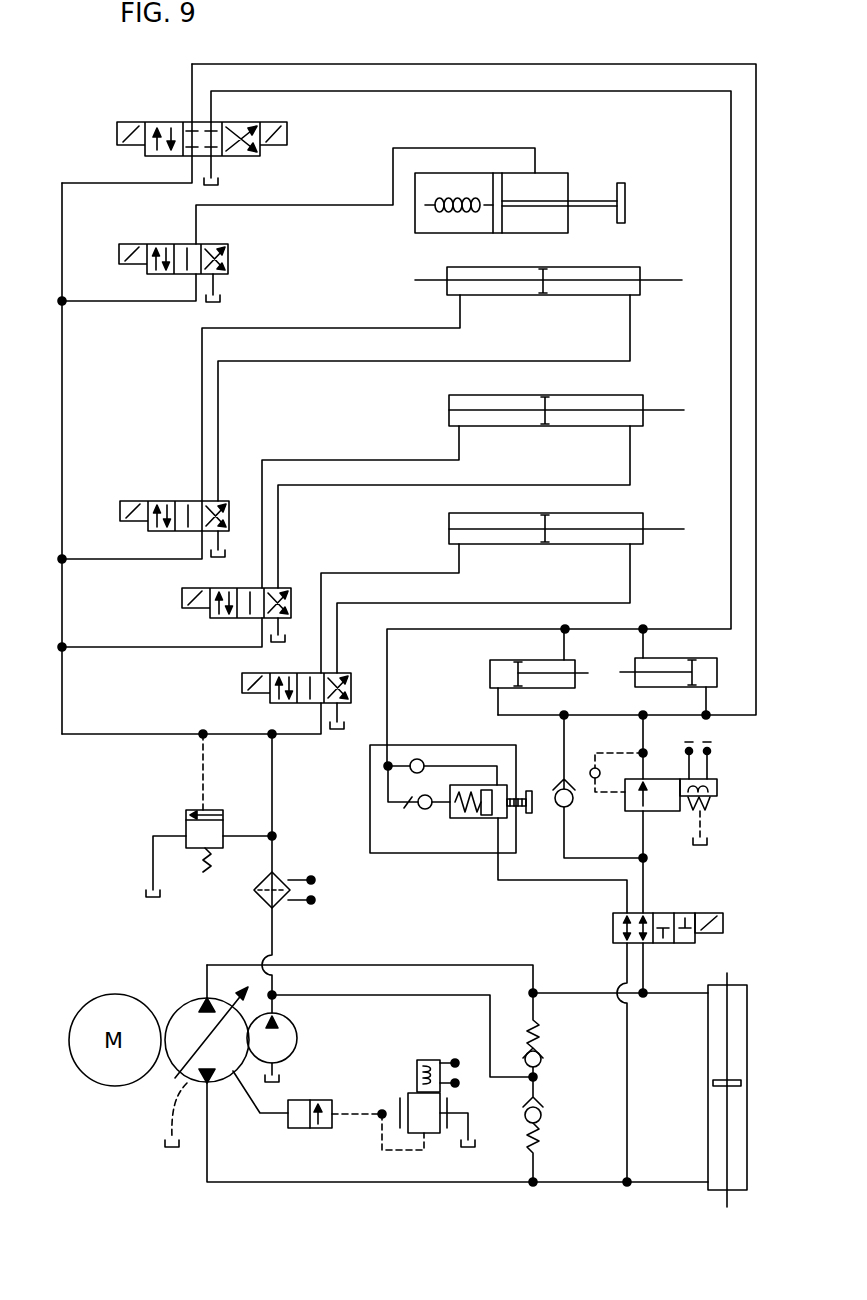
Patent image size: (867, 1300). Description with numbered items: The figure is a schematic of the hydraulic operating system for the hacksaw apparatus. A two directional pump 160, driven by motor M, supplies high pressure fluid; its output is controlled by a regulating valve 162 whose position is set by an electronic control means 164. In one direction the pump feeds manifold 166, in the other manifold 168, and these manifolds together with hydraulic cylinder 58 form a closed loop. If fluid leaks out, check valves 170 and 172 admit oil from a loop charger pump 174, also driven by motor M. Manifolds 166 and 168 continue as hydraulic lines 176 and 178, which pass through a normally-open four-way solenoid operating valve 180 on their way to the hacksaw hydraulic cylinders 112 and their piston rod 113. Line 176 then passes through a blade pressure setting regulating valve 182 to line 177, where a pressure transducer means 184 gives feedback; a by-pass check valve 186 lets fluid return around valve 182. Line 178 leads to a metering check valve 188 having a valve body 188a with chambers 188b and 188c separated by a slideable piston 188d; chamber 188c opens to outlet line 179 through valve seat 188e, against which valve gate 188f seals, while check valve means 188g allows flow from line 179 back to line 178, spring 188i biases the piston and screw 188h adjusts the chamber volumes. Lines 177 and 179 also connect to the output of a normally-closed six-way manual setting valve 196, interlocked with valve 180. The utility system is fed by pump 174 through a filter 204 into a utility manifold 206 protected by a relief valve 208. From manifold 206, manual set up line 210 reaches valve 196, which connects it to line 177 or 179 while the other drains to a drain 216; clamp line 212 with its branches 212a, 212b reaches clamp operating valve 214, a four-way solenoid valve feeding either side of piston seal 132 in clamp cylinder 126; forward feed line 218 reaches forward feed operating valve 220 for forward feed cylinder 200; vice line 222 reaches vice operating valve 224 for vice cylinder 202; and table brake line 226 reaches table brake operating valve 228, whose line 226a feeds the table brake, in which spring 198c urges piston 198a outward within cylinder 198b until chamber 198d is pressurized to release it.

The hydraulic cylinder 58 is at (746, 991).
The hacksaw hydraulic cylinders 112 is at (500, 660).
The piston rod 113 is at (584, 688).
The hydraulic cylinder of clamp 126 is at (628, 510).
The piston seal 132 is at (546, 548).
The two directional pump 160 is at (189, 1000).
The regulating valve 162 is at (318, 1100).
The electrical or electronic control means 164 is at (429, 1056).
The manifold 166 is at (414, 964).
The manifold 168 is at (350, 1182).
The check valve 170 is at (538, 1032).
The check valve 172 is at (541, 1138).
The loop charger pump 174 is at (299, 1043).
The hydraulic line 176 is at (648, 896).
The line 177 is at (753, 330).
The hydraulic line 178 is at (558, 881).
The outlet line 179 is at (729, 290).
The four-way solenoid operating valve 180 is at (702, 913).
The blade pressure setting regulating valve 182 is at (720, 804).
The pressure transducer means 184 is at (590, 770).
The by-pass check valve 186 is at (578, 808).
The metering check valve 188 is at (470, 821).
The valve body 188a is at (500, 780).
The chamber 188b is at (508, 798).
The chamber 188c is at (423, 816).
The slideable piston 188d is at (487, 820).
The valve seat 188e is at (415, 805).
The valve gate 188f is at (454, 816).
The check valve means 188g is at (414, 754).
The screw 188h is at (512, 818).
The spring 188i is at (466, 788).
The manual setting valve 196 is at (164, 123).
The piston 198a is at (498, 228).
The cylinder 198b is at (558, 173).
The spring 198c is at (430, 218).
The chamber 198d is at (565, 222).
The forward feed hydraulic cylinder 200 is at (637, 266).
The vice hydraulic cylinder 202 is at (607, 393).
The filter 204 is at (254, 895).
The utility manifold 206 is at (62, 424).
The relief valve 208 is at (184, 830).
The manual set up line 210 is at (98, 181).
The clamp line 212 is at (292, 738).
The line 212a is at (411, 572).
The line 212b is at (528, 603).
The clamp operating valve 214 is at (242, 702).
The drain 216 is at (220, 179).
The forward feed line 218 is at (104, 558).
The forward feed operating valve 220 is at (118, 500).
The vice line 222 is at (116, 647).
The vice operating valve 224 is at (182, 596).
The table brake line 226 is at (141, 302).
The line 226a is at (365, 196).
The table brake operating valve 228 is at (112, 245).